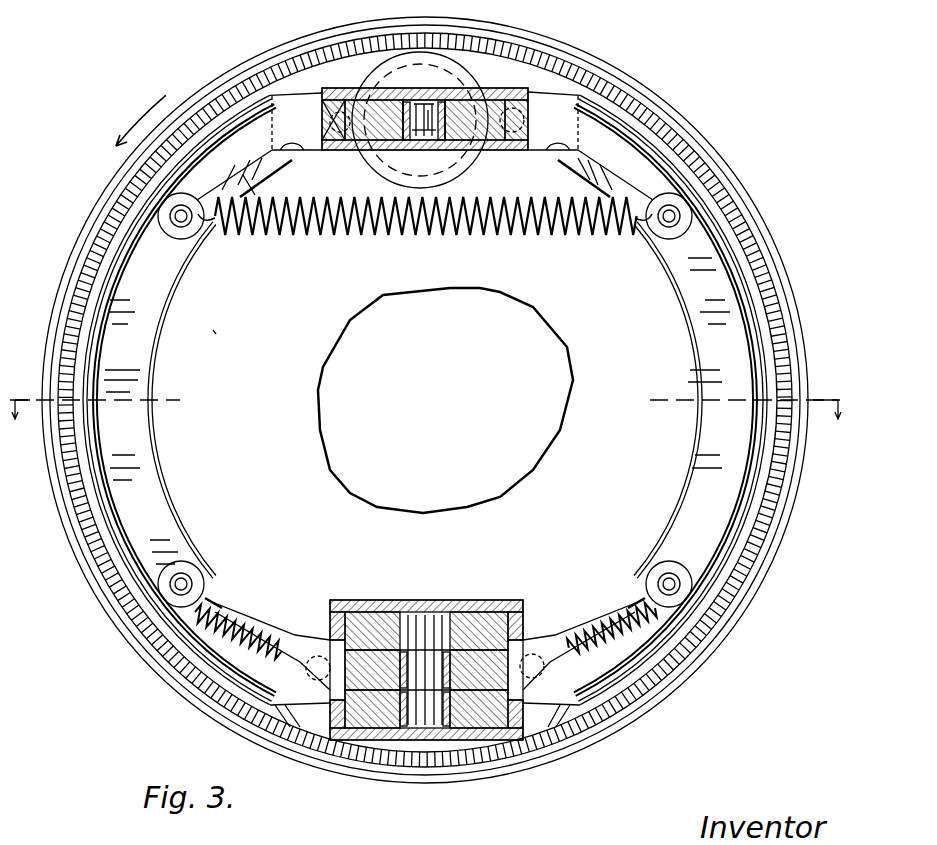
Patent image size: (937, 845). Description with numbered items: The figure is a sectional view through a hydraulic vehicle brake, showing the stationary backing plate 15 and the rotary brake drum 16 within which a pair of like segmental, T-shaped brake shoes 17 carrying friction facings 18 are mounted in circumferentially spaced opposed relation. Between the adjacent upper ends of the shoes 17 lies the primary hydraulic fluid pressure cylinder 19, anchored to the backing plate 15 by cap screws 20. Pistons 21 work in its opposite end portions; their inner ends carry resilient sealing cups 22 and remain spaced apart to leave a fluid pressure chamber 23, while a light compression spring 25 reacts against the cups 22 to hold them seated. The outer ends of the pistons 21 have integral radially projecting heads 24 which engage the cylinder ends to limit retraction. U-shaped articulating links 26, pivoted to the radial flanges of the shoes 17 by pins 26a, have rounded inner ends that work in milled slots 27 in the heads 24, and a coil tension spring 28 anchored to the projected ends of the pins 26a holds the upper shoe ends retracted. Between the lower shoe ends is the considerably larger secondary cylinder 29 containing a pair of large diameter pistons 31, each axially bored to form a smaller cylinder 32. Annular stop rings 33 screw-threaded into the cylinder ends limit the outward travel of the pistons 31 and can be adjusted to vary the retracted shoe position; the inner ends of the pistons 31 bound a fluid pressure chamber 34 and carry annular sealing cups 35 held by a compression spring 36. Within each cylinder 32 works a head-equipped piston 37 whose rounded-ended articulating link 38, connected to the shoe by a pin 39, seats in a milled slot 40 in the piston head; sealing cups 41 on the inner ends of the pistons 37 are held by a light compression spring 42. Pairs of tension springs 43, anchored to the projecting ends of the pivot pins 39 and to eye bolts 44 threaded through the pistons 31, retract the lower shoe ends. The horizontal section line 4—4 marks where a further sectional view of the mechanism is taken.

The section line 4- 4 is at (423, 395).
The backing plate 15 is at (735, 178).
The brake drum 16 is at (762, 277).
The brake shoes 17 is at (694, 311).
The friction facings 18 is at (758, 308).
The primary hydraulic fluid pressure cylinder 19 is at (467, 92).
The cap screws 20 is at (522, 125).
The pistons 21 is at (504, 143).
The resilient sealing cups 22 is at (441, 100).
The fluid pressure chamber 23 is at (425, 135).
The heads 24 is at (512, 143).
The light compression spring 25 is at (445, 125).
The articulating links 26 is at (421, 162).
The pins 26a is at (652, 232).
The milled slots 27 is at (528, 98).
The coil tension spring 28 is at (432, 234).
The secondary cylinder 29 is at (521, 600).
The large diameter pistons 31 is at (488, 606).
The cylinder 32 is at (478, 740).
The annular rings 33 is at (524, 614).
The fluid pressure chamber 34 is at (424, 740).
The resilient annular sealing cups 35 is at (455, 600).
The compression spring 36 is at (395, 740).
The head equipped piston 37 is at (452, 740).
The articulating links 38 is at (630, 583).
The pins 39 is at (667, 582).
The milled slots 40 is at (530, 700).
The resilient sealing cups 41 is at (380, 742).
The compression spring 42 is at (432, 600).
The tension springs 43 is at (606, 604).
The eye bolt 44 is at (540, 660).